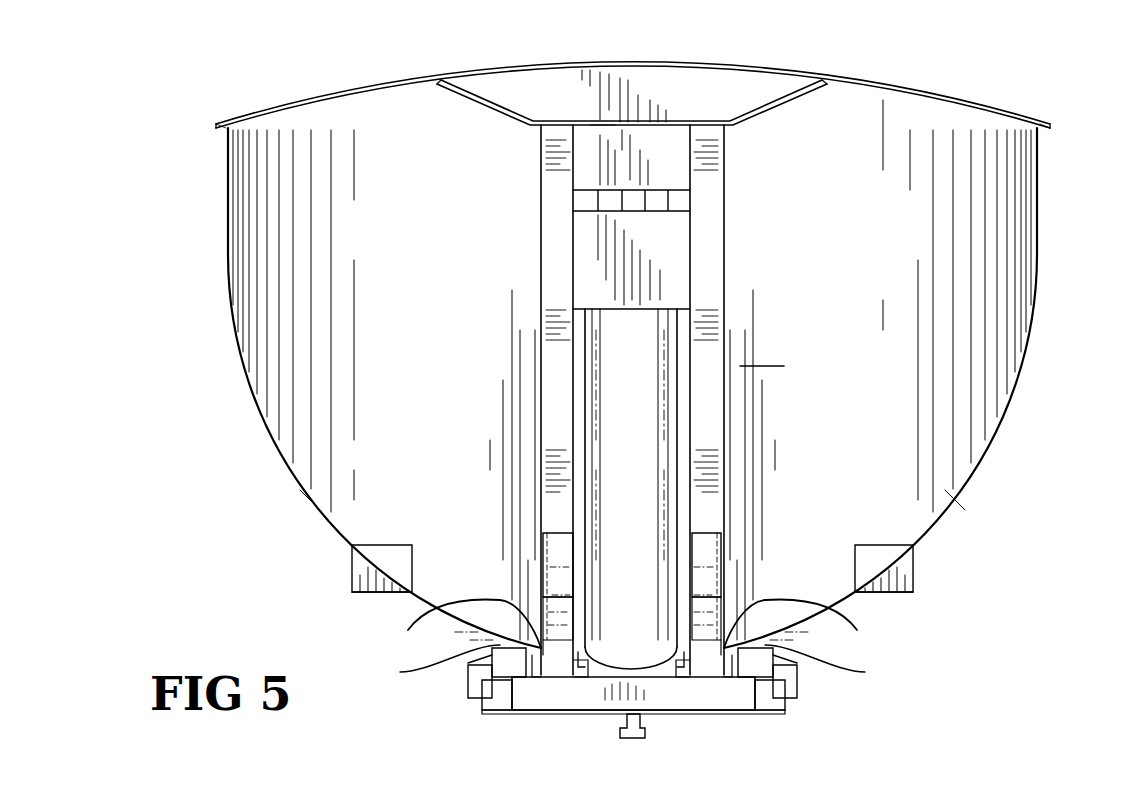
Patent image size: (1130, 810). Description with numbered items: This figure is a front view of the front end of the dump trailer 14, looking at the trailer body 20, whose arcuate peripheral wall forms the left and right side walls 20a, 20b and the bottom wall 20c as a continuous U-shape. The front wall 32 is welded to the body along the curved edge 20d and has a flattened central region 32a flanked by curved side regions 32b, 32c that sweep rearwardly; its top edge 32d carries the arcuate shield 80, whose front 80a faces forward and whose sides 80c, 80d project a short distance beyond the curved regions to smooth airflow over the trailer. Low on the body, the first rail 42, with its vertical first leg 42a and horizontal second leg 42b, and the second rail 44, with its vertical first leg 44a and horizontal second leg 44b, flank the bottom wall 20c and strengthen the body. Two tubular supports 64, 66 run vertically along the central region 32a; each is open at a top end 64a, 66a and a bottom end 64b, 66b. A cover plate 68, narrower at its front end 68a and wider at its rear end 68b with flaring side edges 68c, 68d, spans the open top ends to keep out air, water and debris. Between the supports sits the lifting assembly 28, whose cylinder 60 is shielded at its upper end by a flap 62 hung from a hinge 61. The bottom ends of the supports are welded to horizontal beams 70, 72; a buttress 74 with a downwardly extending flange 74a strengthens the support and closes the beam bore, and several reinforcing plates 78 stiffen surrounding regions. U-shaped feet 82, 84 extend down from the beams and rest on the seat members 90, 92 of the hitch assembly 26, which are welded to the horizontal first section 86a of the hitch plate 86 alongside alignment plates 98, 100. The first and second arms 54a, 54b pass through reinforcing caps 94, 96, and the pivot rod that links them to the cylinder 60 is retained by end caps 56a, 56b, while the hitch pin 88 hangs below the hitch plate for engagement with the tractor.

The dump trailer 14 is at (927, 664).
The trailer body 20 is at (282, 462).
The left side wall 20a is at (1037, 163).
The right side wall 20b is at (228, 163).
The bottom wall 20c is at (438, 615).
The curved edge 20d is at (312, 500).
The hitch assembly 26 is at (744, 720).
The lifting assembly 28 is at (692, 489).
The cylinder 60 is at (657, 405).
The front wall 32 is at (356, 307).
The central region 32a is at (762, 357).
The first side region 32b is at (990, 200).
The second side region 32c is at (275, 200).
The top edge 32d is at (400, 84).
The first rail 42 is at (951, 568).
The vertical first leg 42a is at (917, 567).
The horizontal second leg 42b is at (900, 594).
The second rail 44 is at (312, 568).
The vertical first leg 44a is at (348, 567).
The horizontal second leg 44b is at (368, 594).
The first arm 54a is at (790, 700).
The second arm 54b is at (476, 700).
The end cap 56a is at (797, 680).
The end cap 56b is at (467, 680).
The hinge 61 is at (585, 200).
The flap 62 is at (590, 268).
The support 64 is at (727, 450).
The top end 64a is at (712, 145).
The bottom end 64b is at (732, 578).
The support 66 is at (540, 303).
The top end 66a is at (555, 145).
The bottom end 66b is at (545, 600).
The cover plate 68 is at (750, 68).
The front end 68a is at (600, 125).
The rear end 68b is at (548, 66).
The side edge 68c is at (788, 104).
The side edge 68d is at (478, 103).
The beam 70 is at (736, 593).
The beam 72 is at (532, 591).
The buttress 74 is at (539, 543).
The flange 74a is at (707, 608).
The reinforcing plates 78 is at (500, 610).
The shield 80 is at (930, 84).
The front 80a is at (870, 82).
The side 80c is at (1050, 128).
The side 80d is at (216, 128).
The foot 82 is at (710, 680).
The foot 84 is at (558, 675).
The hitch plate 86 is at (587, 724).
The first section 86a is at (530, 722).
The hitch pin 88 is at (632, 740).
The seat member 90 is at (735, 710).
The seat member 92 is at (535, 707).
The reinforcing cap 94 is at (770, 645).
The reinforcing cap 96 is at (498, 648).
The alignment plate 98 is at (682, 676).
The alignment plate 100 is at (580, 677).